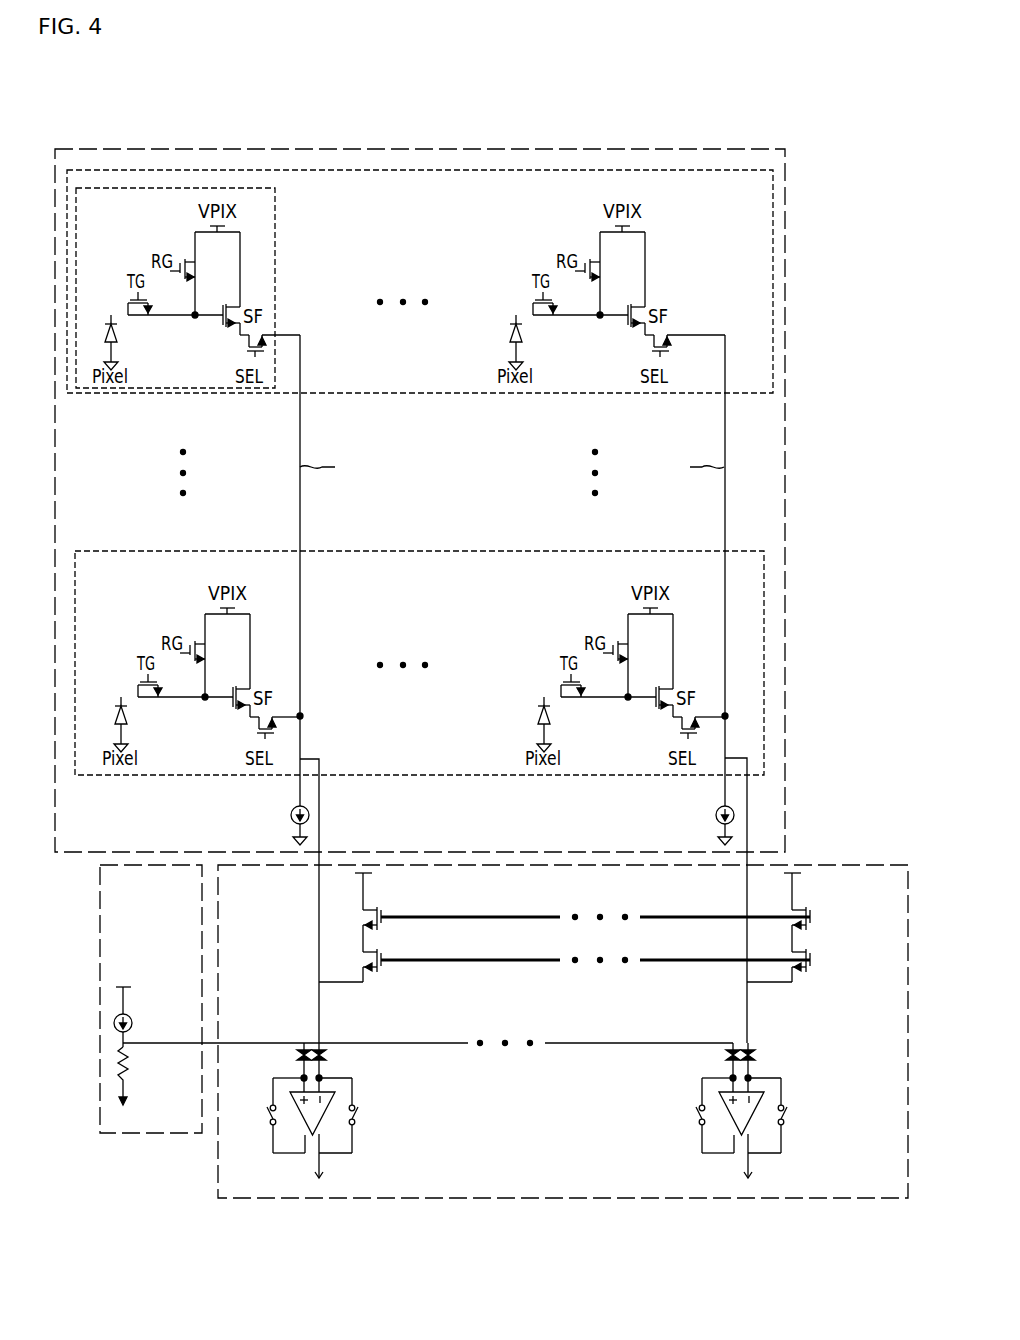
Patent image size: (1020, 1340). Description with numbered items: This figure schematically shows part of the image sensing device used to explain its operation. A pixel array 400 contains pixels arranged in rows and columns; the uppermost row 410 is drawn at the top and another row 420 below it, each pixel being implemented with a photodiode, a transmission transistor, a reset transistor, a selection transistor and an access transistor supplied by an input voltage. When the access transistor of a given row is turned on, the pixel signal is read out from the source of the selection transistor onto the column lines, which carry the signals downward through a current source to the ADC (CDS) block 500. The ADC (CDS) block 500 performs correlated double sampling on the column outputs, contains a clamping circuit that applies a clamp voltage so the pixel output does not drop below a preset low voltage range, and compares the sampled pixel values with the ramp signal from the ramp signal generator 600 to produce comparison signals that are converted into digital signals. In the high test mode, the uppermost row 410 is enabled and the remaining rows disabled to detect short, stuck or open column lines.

The pixel array 400 is at (420, 149).
The uppermost row 410 is at (773, 281).
The row 420 is at (764, 663).
The ADC (CDS) block 500 is at (857, 865).
The ramp signal generator 600 is at (150, 1133).